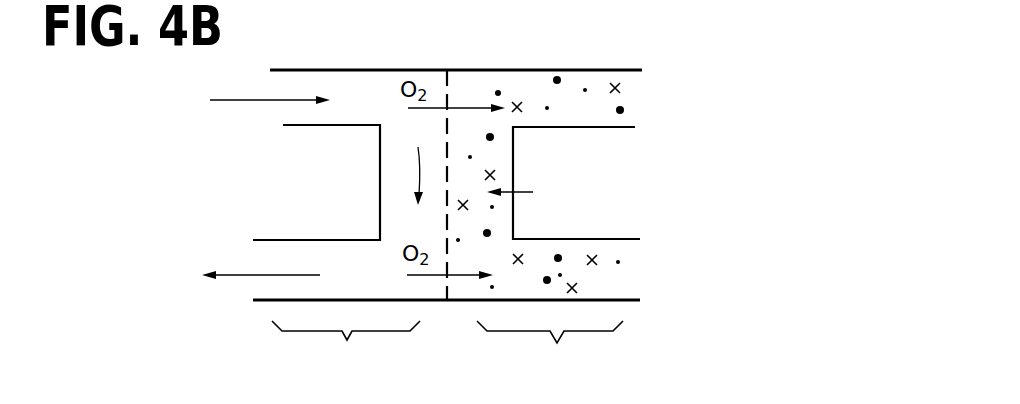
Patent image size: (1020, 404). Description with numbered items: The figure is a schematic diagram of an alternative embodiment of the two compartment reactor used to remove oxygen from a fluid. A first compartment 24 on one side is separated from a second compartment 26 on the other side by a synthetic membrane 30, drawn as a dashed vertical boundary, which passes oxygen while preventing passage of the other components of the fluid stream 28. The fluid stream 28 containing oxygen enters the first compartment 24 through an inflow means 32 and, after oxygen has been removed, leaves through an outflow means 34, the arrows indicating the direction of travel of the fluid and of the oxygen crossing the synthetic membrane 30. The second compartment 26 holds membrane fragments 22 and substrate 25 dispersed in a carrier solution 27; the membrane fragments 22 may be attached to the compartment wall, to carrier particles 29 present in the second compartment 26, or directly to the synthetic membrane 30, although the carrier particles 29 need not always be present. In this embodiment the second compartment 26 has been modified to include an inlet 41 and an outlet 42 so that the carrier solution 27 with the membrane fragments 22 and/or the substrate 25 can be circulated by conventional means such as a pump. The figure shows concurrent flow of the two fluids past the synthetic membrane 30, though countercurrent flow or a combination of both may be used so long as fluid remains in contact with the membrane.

The membrane fragments 22 is at (500, 90).
The first compartment 24 is at (346, 306).
The substrate 25 is at (519, 275).
The second compartment 26 is at (558, 249).
The carrier solution 27 is at (530, 192).
The fluid stream 28 is at (383, 88).
The carrier particles 29 is at (624, 110).
The synthetic membrane 30 is at (447, 90).
The inflow means 32 is at (280, 115).
The outflow means 34 is at (247, 292).
The inlet 41 is at (638, 88).
The outlet 42 is at (633, 280).